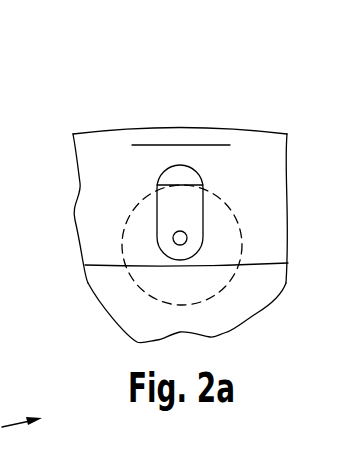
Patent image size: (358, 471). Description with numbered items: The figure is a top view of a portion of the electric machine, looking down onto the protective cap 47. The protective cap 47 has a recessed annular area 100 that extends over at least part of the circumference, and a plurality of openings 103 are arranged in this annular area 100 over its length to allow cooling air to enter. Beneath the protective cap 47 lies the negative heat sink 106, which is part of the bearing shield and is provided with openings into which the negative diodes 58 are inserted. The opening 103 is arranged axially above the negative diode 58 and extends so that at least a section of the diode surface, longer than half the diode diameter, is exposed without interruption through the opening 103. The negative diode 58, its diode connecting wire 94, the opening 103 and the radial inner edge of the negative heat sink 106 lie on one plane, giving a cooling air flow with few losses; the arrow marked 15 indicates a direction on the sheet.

The negative diode 58 is at (200, 108).
The protective cap 47 is at (275, 155).
The recessed annular area 100 is at (86, 220).
The opening 103 is at (163, 210).
The negative heat sink 106 is at (175, 176).
The diode connecting wire 94 is at (187, 239).
The direction arrow 15 is at (2, 422).